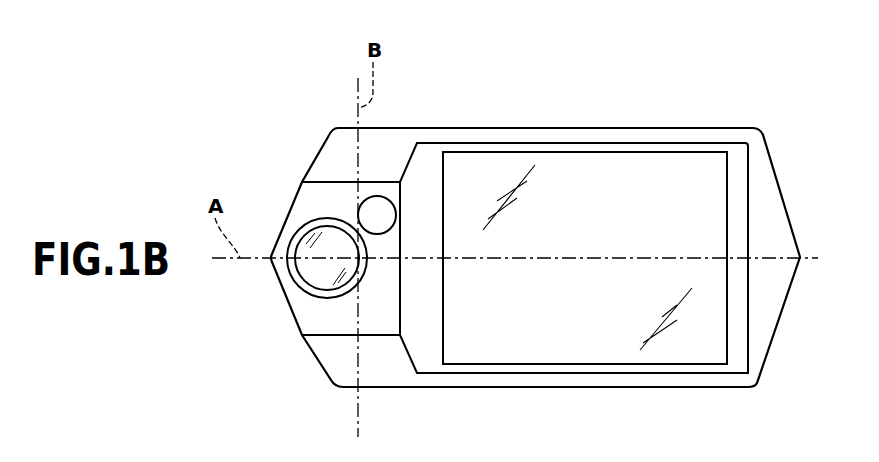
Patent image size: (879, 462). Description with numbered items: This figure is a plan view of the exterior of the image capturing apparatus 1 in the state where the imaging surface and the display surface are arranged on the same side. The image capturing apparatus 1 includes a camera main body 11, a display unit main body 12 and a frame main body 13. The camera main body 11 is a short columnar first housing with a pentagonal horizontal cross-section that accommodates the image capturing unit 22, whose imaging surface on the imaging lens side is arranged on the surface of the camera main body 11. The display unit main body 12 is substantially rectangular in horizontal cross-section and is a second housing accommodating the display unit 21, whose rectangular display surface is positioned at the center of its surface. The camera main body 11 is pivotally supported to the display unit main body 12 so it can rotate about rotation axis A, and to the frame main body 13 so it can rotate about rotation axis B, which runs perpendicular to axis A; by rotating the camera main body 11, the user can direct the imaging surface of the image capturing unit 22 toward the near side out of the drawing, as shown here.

The image capturing apparatus 1 is at (760, 95).
The camera main body 11 is at (302, 310).
The display unit main body 12 is at (737, 348).
The frame main body 13 is at (677, 377).
The display unit 21 is at (558, 343).
The image capturing unit 22 is at (317, 272).